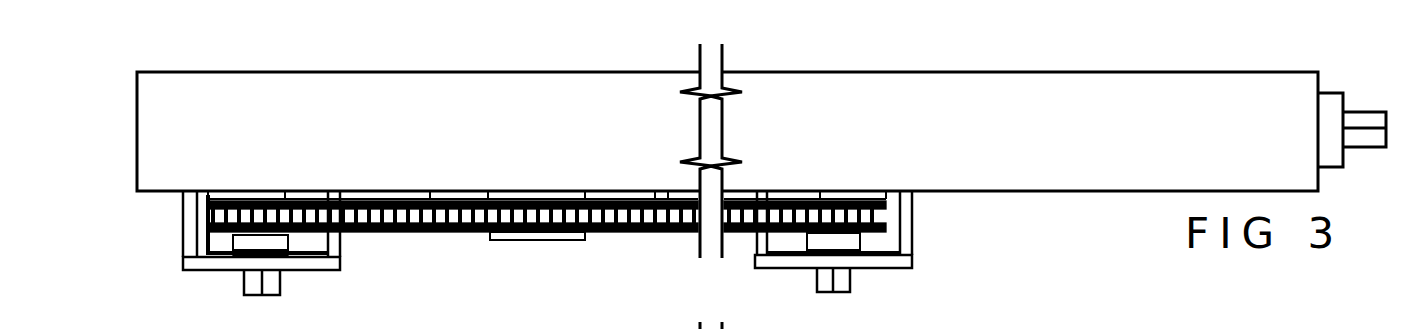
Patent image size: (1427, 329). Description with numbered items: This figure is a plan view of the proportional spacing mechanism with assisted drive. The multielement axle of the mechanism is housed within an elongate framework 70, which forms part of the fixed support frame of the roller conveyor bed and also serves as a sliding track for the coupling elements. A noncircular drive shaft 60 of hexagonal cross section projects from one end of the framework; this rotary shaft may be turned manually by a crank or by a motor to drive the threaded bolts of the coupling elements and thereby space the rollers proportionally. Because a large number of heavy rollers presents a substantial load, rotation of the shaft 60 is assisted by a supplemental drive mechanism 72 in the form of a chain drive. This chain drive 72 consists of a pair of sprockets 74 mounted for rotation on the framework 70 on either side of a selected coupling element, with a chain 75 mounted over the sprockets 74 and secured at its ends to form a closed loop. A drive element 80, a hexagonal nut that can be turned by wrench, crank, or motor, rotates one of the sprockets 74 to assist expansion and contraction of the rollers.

The drive shaft 60 is at (1358, 138).
The elongate framework 70 is at (1090, 316).
The supplemental drive mechanism 72 is at (917, 271).
The sprockets 74 is at (280, 201).
The chain 75 is at (421, 205).
The drive element 80 is at (281, 284).